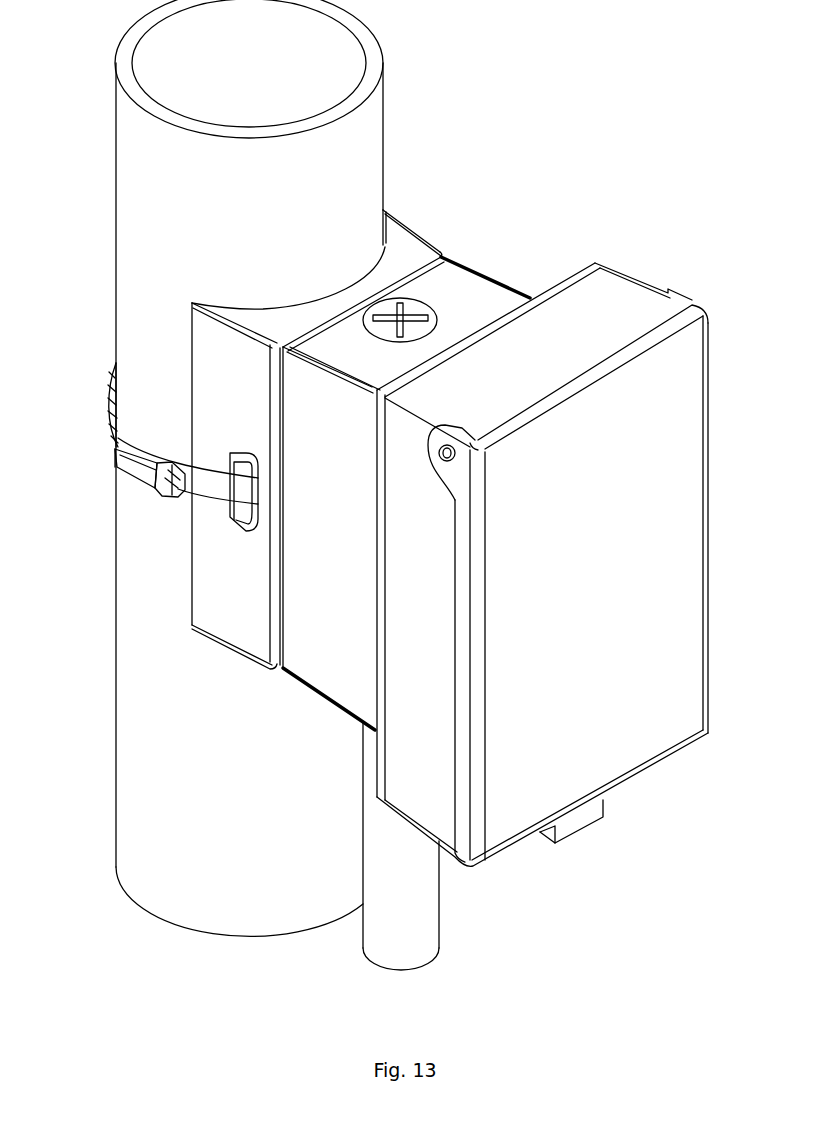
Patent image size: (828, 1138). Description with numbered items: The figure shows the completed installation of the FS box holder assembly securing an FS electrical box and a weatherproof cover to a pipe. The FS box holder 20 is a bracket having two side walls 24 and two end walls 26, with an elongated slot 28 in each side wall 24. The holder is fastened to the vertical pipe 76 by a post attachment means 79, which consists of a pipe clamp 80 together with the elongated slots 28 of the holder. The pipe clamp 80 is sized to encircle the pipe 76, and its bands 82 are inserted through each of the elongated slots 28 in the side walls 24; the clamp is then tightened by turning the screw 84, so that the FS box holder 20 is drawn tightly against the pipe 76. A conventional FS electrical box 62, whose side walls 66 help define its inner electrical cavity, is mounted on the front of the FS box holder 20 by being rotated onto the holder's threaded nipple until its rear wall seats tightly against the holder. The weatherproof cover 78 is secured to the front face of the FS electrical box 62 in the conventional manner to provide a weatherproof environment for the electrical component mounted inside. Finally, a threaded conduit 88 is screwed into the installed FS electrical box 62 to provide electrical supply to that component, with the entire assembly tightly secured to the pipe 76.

The FS box holder 20 is at (324, 410).
The side wall 24 is at (217, 378).
The end wall 26 is at (269, 329).
The elongated slot 28 is at (229, 463).
The FS electrical box 62 is at (407, 463).
The side wall 66 is at (319, 544).
The pipe 76 is at (113, 142).
The weatherproof cover 78 is at (633, 283).
The post attachment means 79 is at (243, 487).
The pipe clamp 80 is at (132, 477).
The band 82 is at (213, 487).
The screw 84 is at (168, 498).
The threaded conduit 88 is at (441, 935).